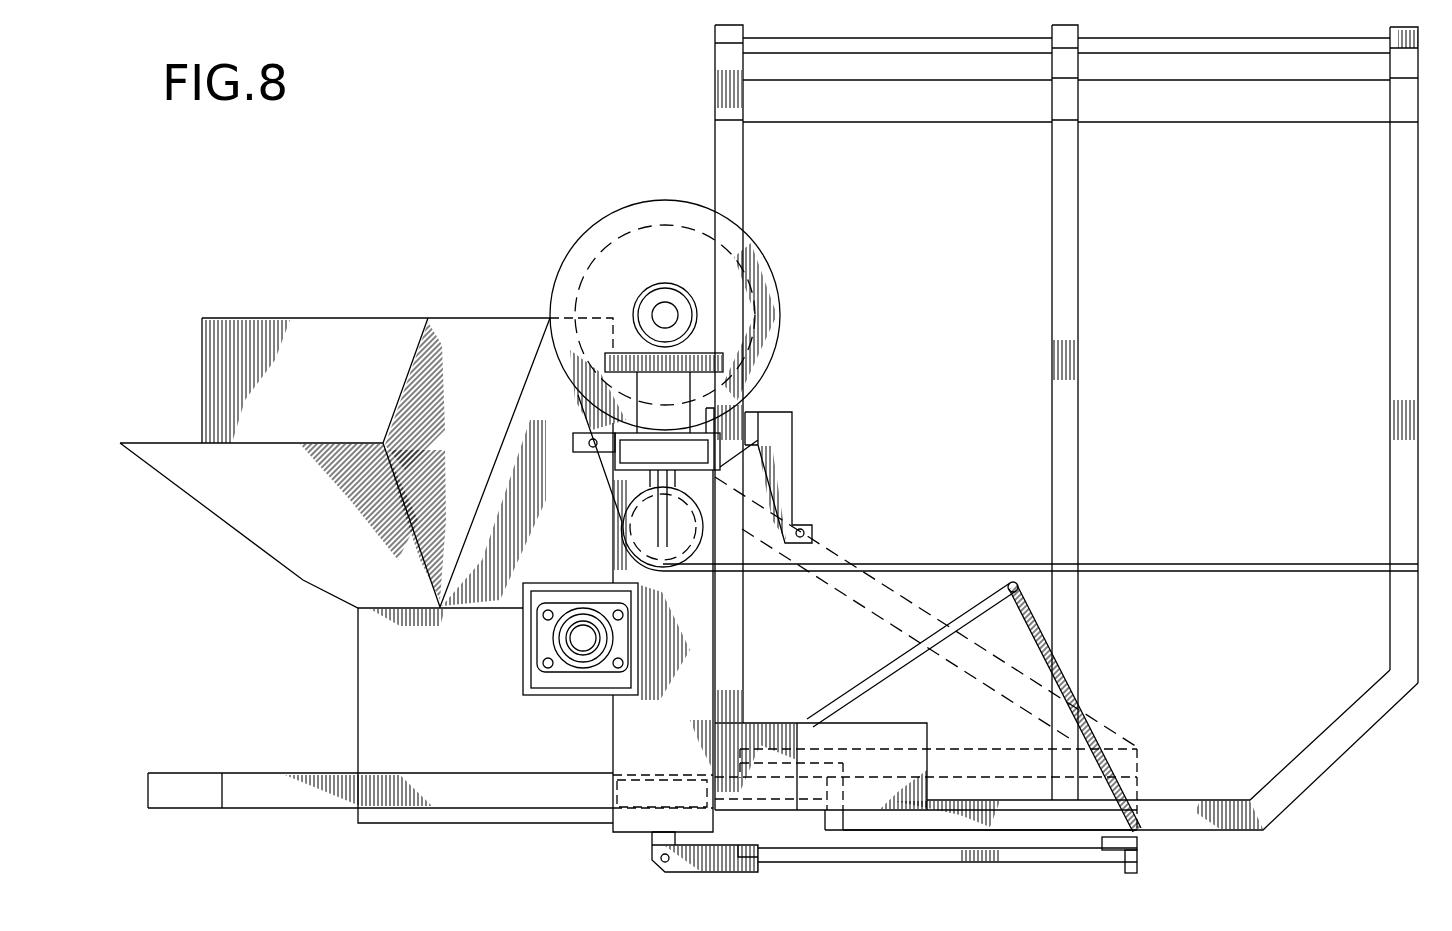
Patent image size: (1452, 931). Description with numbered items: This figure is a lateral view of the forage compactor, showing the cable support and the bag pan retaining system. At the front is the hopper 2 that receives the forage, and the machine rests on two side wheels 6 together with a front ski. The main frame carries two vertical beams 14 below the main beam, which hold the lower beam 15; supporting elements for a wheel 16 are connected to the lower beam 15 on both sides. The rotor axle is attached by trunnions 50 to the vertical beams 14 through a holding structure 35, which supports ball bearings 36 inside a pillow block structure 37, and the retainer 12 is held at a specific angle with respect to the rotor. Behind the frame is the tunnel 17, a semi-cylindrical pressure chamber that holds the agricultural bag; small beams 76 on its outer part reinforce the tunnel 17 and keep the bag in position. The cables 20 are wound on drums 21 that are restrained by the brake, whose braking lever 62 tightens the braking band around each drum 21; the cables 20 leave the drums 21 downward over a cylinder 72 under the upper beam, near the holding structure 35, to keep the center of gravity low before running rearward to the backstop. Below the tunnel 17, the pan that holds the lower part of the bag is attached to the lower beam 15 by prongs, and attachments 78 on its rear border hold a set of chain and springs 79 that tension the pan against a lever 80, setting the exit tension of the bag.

The hopper 2 is at (248, 512).
The wheels 6 is at (1072, 676).
The retainer 12 is at (640, 515).
The vertical beams 14 is at (653, 727).
The lower beam 15 is at (645, 797).
The wheel 16 is at (876, 735).
The tunnel 17 is at (908, 319).
The cables 20 is at (935, 564).
The drums 21 is at (686, 260).
The holding structure 35 is at (572, 582).
The ball bearings 36 is at (560, 632).
The pillow block structure 37 is at (540, 652).
The trunnions 50 is at (581, 650).
The braking lever 62 is at (786, 432).
The cylinder 72 is at (1140, 852).
The small beams 76 is at (728, 150).
The attachments 78 is at (1142, 872).
The chain and springs 79 is at (1086, 718).
The lever 80 is at (1035, 592).